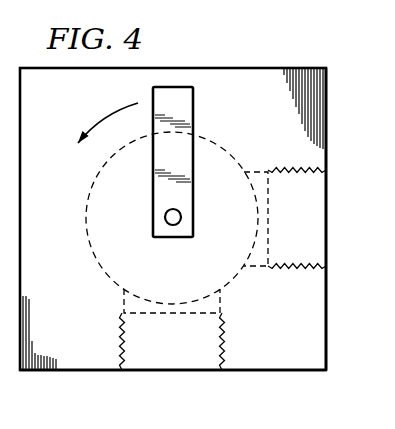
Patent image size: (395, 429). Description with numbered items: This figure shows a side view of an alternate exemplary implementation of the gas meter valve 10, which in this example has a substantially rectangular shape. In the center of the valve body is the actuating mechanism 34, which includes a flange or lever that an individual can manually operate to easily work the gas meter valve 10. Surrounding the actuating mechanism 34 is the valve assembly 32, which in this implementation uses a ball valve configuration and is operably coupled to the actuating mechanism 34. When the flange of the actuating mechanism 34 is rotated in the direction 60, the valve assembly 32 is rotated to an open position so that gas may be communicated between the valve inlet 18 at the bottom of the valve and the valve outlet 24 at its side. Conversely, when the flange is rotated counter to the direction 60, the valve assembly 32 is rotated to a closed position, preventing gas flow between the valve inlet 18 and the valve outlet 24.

The gas meter valve 10 is at (205, 64).
The valve inlet 18 is at (173, 372).
The valve outlet 24 is at (327, 212).
The valve assembly 32 is at (92, 253).
The actuating mechanism 34 is at (194, 112).
The direction 60 is at (98, 118).